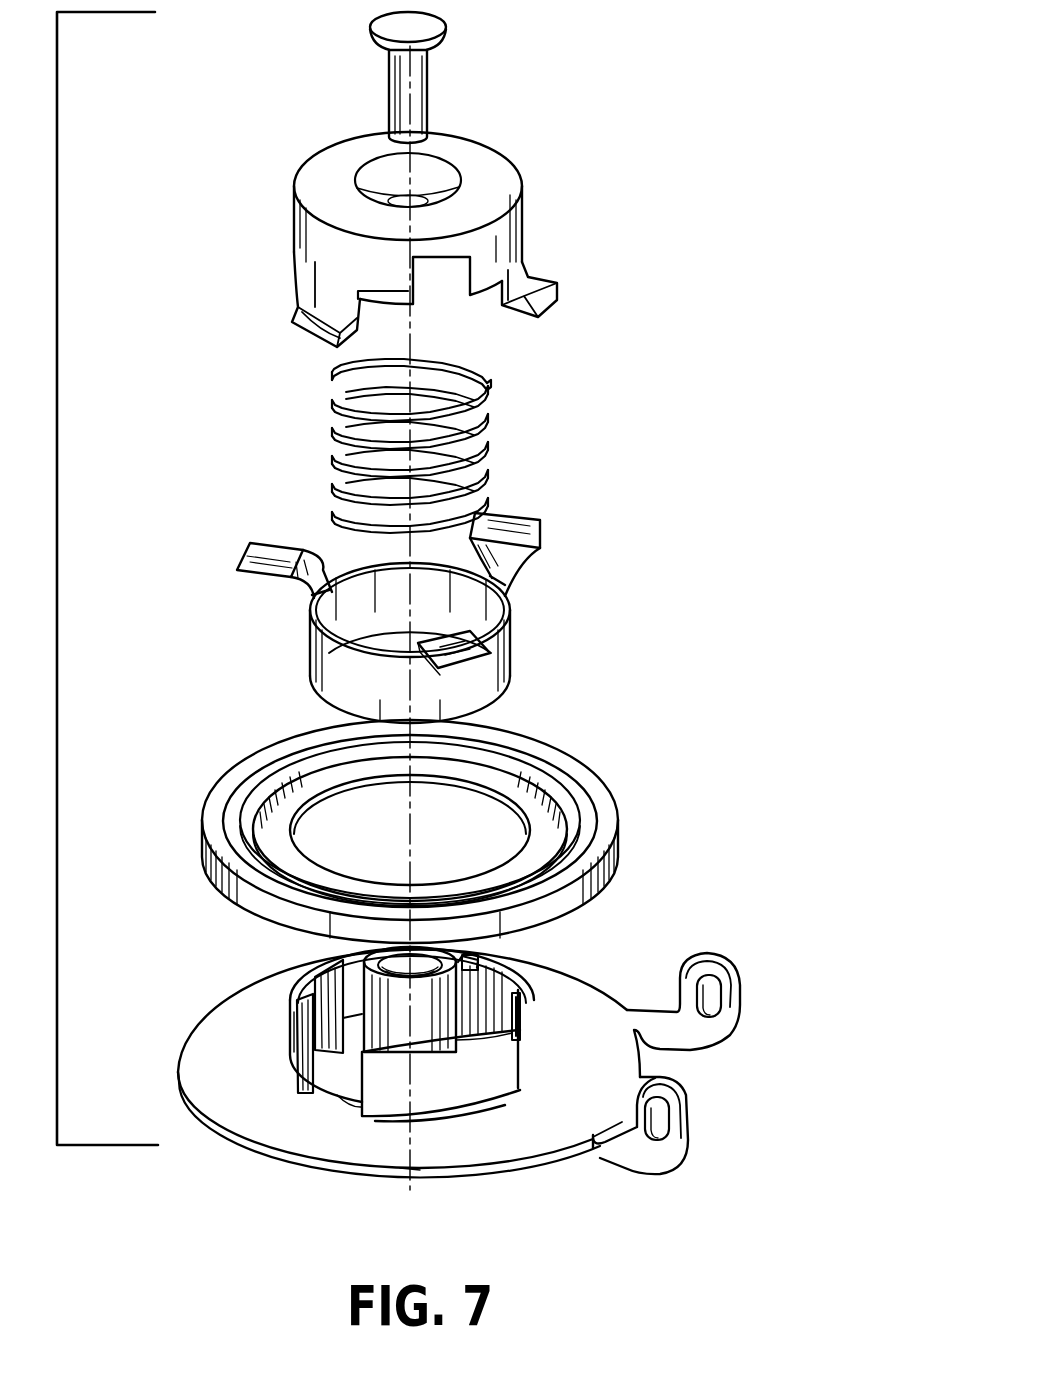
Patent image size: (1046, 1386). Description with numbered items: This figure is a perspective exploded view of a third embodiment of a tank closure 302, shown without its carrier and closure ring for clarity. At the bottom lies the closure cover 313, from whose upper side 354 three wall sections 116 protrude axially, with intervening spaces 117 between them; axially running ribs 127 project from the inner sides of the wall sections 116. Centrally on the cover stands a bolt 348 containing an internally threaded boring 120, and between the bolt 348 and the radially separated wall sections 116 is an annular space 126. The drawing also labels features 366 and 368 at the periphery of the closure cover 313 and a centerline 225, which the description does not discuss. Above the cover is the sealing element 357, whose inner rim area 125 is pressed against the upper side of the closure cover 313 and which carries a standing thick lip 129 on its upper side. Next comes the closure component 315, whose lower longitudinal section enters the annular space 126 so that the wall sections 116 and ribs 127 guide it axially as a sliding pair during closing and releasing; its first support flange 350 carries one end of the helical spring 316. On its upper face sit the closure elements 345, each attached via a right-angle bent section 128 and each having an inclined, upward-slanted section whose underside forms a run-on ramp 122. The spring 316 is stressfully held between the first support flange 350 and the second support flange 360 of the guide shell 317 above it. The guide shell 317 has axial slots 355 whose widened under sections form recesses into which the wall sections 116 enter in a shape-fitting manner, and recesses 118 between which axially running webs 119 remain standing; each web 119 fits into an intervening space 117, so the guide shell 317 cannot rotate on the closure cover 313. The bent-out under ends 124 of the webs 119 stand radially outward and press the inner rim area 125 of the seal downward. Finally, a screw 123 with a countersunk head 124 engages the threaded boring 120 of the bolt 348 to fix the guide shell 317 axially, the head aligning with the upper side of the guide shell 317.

The tank closure 302 is at (655, 253).
The countersunk head 124 is at (430, 34).
The screw 123 is at (430, 86).
The guide shell 317 is at (418, 218).
The second support flange 360 is at (355, 145).
The axial slots 355 is at (442, 270).
The recesses 118 is at (388, 300).
The axially running webs 119 is at (305, 290).
The helical spring 316 is at (488, 437).
The closure component 315 is at (400, 596).
The first support flange 350 is at (400, 640).
The run-on ramp 122 is at (482, 680).
The right-angle bent section 128 is at (290, 590).
The closure elements 345 is at (500, 515).
The axially running ribs 127 is at (425, 655).
The sealing element 357 is at (426, 827).
The thick lip 129 is at (250, 762).
The inner rim area 125 is at (510, 786).
The closure cover 313 is at (482, 1083).
The upper side 354 is at (212, 1045).
The mounting lug 366 is at (720, 958).
The mounting slot 368 is at (712, 990).
The internally threaded boring 120 is at (350, 1093).
The wall sections 116 is at (320, 975).
The intervening spaces 117 is at (340, 1078).
The annular space 126 is at (348, 1068).
The bolt 348 is at (400, 1036).
The axis 225 is at (432, 1180).